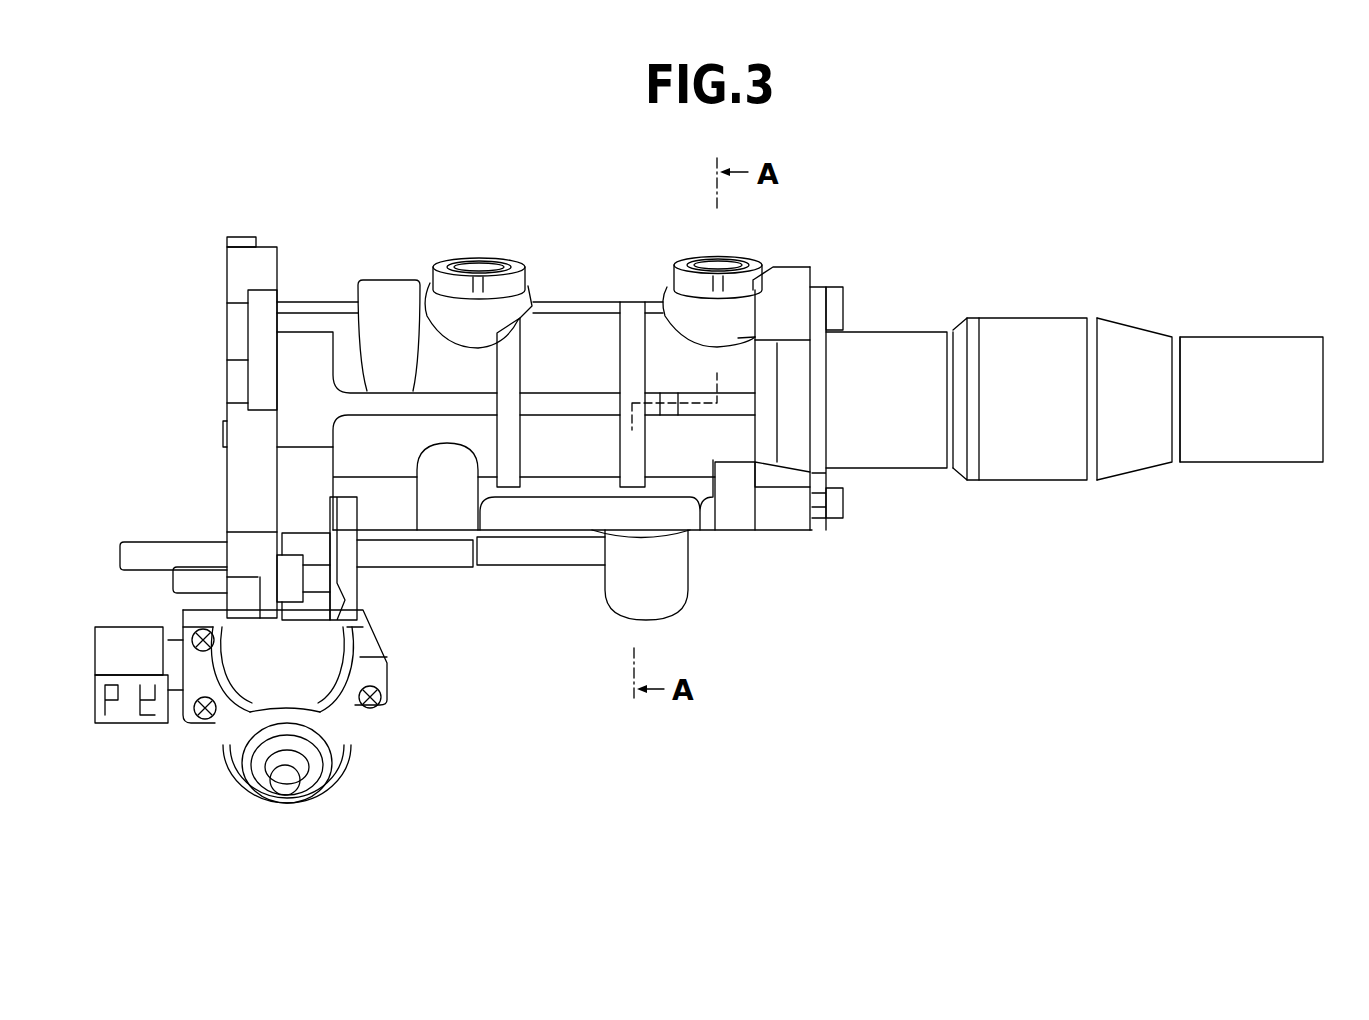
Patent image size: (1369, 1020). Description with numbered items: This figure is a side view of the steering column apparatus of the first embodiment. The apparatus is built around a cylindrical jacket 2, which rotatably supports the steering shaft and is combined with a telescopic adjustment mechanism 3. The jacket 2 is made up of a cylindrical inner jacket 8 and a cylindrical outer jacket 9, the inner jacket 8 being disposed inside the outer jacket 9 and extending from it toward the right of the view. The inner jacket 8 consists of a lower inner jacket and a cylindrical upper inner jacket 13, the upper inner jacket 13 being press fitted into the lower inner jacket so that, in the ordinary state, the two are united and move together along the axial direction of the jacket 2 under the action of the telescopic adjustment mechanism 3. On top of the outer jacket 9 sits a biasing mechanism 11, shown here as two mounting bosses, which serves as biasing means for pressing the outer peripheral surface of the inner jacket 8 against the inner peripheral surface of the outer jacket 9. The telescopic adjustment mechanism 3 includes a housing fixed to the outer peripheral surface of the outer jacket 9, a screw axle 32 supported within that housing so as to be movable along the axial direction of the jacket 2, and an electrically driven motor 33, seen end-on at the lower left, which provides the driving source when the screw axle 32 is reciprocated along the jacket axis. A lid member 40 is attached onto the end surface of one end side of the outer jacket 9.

The jacket 2 is at (1061, 341).
The telescopic adjustment mechanism 3 is at (360, 783).
The inner jacket 8 is at (1138, 363).
The upper inner jacket 13 is at (1027, 337).
The outer jacket 9 is at (800, 283).
The biasing mechanism 11 is at (479, 252).
The screw axle 32 is at (443, 556).
The electrically driven motor 33 is at (340, 721).
The lid member 40 is at (818, 523).